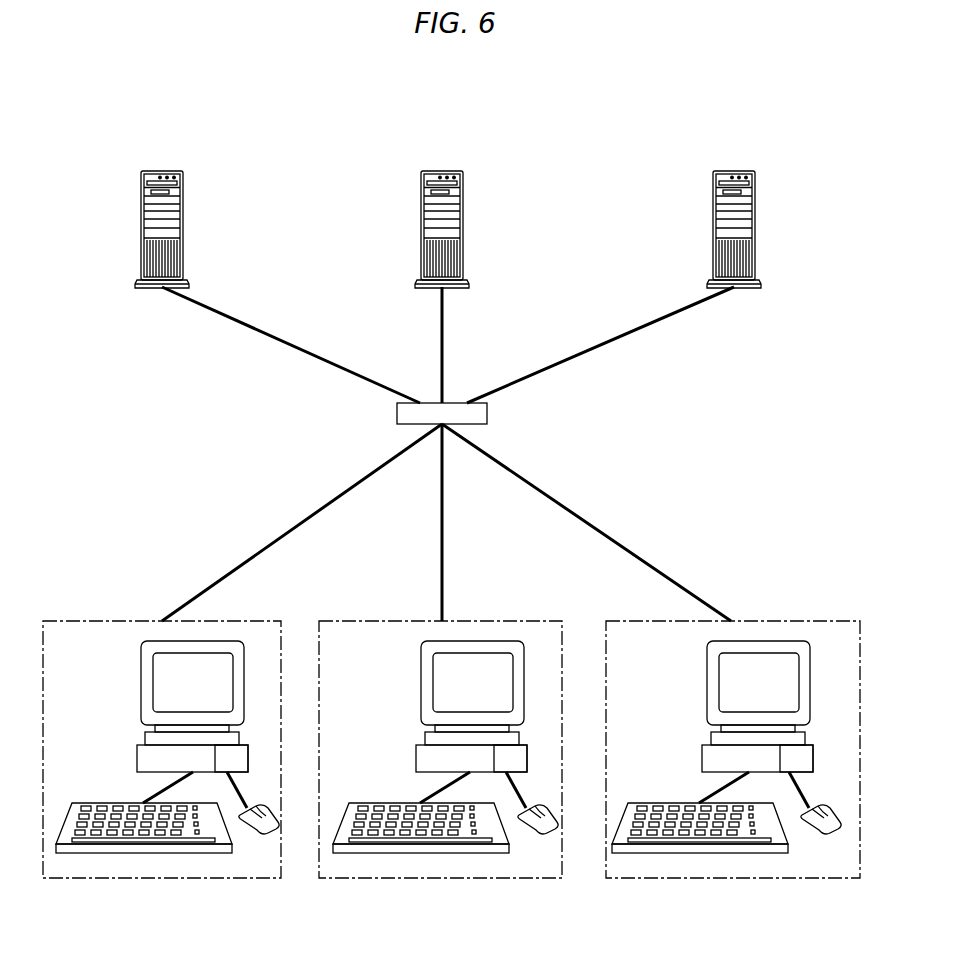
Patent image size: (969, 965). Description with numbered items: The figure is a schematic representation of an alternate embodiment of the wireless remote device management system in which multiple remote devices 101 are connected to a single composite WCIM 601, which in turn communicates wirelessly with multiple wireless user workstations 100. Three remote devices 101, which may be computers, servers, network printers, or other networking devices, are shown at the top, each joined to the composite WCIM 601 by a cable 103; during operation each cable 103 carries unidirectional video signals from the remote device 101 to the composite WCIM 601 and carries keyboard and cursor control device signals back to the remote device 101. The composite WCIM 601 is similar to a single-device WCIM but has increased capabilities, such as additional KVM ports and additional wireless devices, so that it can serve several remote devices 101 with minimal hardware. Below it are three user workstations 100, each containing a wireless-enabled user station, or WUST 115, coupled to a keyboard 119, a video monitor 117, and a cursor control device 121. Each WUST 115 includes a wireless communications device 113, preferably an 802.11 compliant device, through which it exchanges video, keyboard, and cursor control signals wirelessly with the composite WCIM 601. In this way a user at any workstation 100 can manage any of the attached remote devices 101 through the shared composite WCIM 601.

The wireless user workstation 100 is at (132, 613).
The remote device 101 is at (143, 171).
The cable 103 is at (300, 350).
The wireless communications device 113 is at (248, 758).
The wireless-enabled user station (WUST) 115 is at (137, 750).
The video monitor 117 is at (141, 672).
The keyboard 119 is at (80, 803).
The cursor control device 121 is at (272, 812).
The composite WCIM 601 is at (397, 411).